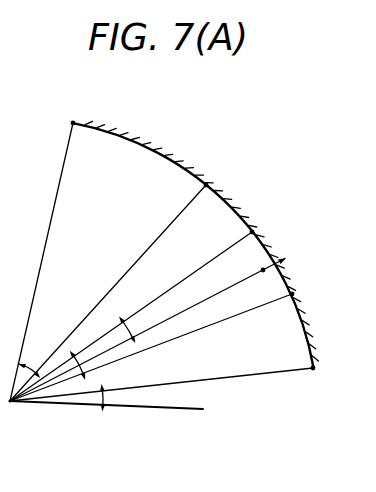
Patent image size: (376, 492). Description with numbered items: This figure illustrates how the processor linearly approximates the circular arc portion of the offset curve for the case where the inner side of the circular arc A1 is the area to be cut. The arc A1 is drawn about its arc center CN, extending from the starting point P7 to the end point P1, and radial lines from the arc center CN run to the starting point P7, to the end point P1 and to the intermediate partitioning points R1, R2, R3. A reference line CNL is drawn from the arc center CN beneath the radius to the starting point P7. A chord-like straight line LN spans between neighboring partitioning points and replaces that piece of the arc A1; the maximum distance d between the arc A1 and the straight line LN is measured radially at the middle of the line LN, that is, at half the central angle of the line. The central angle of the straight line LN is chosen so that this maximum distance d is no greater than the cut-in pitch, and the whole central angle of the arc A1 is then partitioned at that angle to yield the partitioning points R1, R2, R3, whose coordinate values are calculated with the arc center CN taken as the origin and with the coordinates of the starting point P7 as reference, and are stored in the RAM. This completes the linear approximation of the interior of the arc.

The arc center CN is at (14, 415).
The circular arc A1 is at (125, 133).
The straight line LN is at (272, 250).
The end point of circular arc P1 is at (47, 251).
The starting point of circular arc P7 is at (176, 379).
The first partitioning point R1 is at (167, 342).
The second partitioning point R2 is at (147, 309).
The third partitioning point R3 is at (123, 284).
The maximum distance d is at (280, 270).
The center line CNL is at (240, 377).